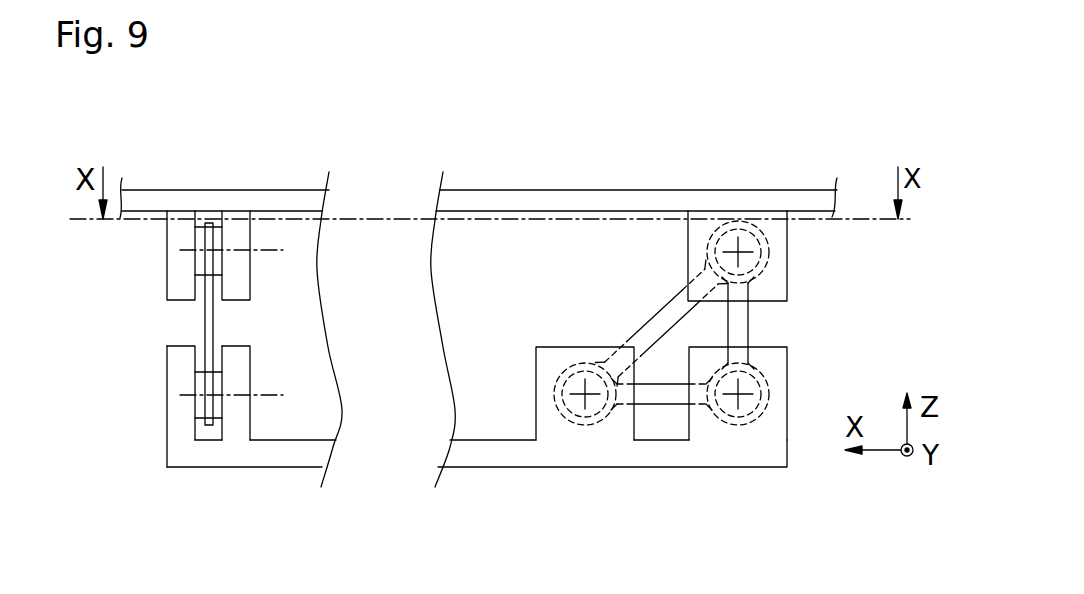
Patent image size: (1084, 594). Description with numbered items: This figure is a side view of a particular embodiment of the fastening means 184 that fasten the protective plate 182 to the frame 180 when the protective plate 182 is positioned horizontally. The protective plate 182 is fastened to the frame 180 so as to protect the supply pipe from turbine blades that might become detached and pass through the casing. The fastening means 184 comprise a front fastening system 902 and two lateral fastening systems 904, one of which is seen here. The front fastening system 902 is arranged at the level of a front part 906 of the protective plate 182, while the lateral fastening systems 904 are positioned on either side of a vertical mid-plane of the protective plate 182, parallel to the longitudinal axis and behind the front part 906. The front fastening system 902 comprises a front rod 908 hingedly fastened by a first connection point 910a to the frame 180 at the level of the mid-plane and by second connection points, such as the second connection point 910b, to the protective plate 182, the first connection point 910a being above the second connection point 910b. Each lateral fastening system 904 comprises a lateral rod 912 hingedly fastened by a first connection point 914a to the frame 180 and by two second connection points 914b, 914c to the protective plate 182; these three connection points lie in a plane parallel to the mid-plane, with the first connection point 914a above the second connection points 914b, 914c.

The frame 180 is at (620, 198).
The protective plate 182 is at (475, 457).
The fastening means 184 is at (740, 329).
The front fastening system 902 is at (202, 366).
The lateral fastening system 904 is at (688, 337).
The front part 906 is at (220, 438).
The front rod 908 is at (208, 325).
The first connection point 910a is at (203, 252).
The second connection point 910b is at (202, 393).
The lateral rod 912 is at (665, 320).
The first connection point 914a is at (735, 250).
The second connection point 914b is at (592, 405).
The second connection point 914c is at (742, 405).